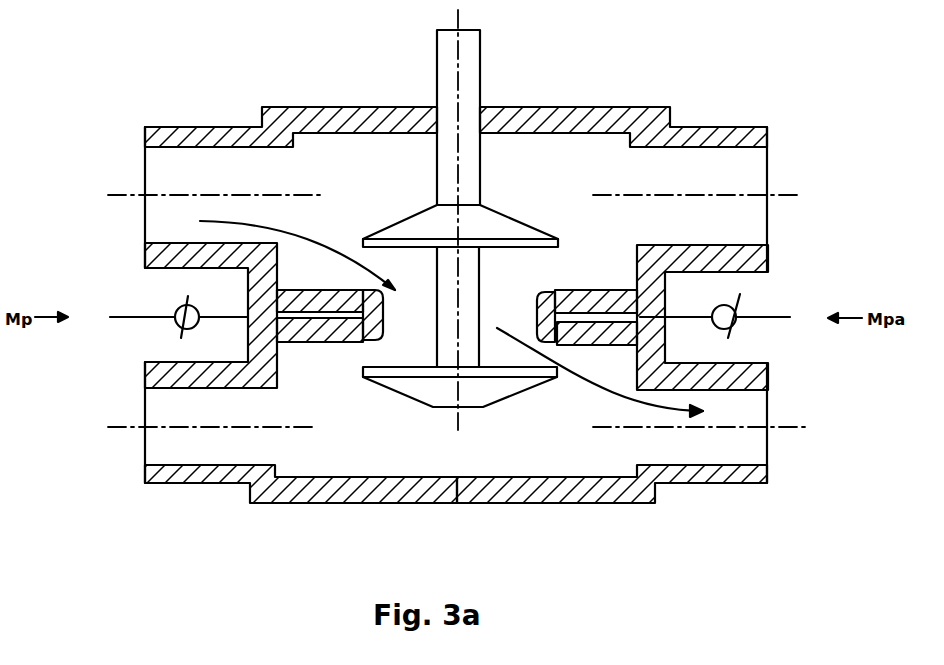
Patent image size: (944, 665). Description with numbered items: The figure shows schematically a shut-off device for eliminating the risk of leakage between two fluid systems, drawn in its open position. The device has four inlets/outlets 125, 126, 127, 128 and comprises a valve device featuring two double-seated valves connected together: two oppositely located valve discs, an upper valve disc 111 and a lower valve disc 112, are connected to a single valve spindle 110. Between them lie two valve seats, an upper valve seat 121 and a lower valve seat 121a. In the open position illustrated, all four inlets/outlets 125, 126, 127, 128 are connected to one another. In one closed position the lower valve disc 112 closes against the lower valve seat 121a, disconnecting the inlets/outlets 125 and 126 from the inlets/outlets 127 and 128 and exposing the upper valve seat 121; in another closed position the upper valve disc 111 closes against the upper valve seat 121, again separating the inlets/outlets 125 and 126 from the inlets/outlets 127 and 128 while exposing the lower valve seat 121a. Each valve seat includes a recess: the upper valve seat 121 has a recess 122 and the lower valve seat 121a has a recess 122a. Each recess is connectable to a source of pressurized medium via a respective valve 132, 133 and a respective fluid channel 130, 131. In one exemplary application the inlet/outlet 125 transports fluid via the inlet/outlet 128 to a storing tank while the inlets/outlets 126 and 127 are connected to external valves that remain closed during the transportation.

The valve spindle 110 is at (472, 72).
The upper valve disc 111 is at (393, 225).
The lower valve disc 112 is at (420, 387).
The upper valve seat 121 is at (325, 290).
The lower valve seat 121a is at (300, 343).
The recess 122 is at (378, 248).
The recess 122a is at (366, 343).
The inlet/outlet 125 is at (160, 170).
The inlet/outlet 126 is at (755, 165).
The inlet/outlet 127 is at (157, 410).
The inlet/outlet 128 is at (757, 412).
The fluid channel 130 is at (248, 314).
The fluid channel 131 is at (666, 313).
The valve 132 is at (178, 325).
The valve 133 is at (736, 326).